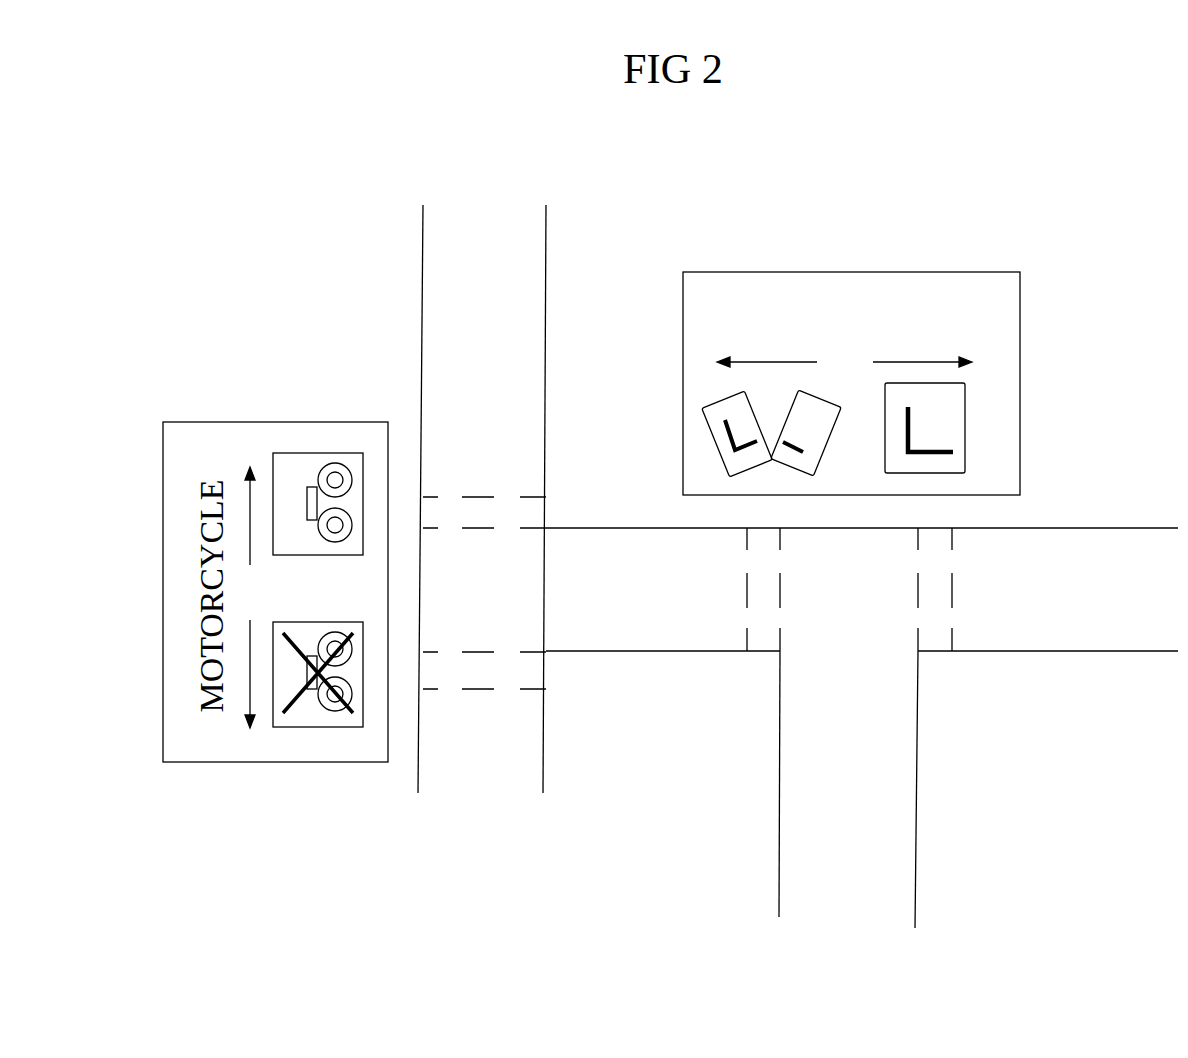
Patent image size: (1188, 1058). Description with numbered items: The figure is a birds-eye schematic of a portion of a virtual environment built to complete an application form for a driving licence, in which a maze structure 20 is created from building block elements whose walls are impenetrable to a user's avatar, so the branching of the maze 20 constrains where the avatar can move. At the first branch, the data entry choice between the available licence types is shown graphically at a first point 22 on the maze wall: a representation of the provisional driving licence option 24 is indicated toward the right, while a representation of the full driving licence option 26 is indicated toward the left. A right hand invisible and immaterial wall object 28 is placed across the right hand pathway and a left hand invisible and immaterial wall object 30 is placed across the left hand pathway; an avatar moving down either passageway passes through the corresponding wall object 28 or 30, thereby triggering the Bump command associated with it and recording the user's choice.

The maze structure 20 is at (472, 852).
The first point 22 is at (880, 327).
The provisional driving licence option 24 is at (965, 428).
The full driving licence option 26 is at (715, 397).
The right hand wall object 28 is at (928, 597).
The left hand wall object 30 is at (770, 597).